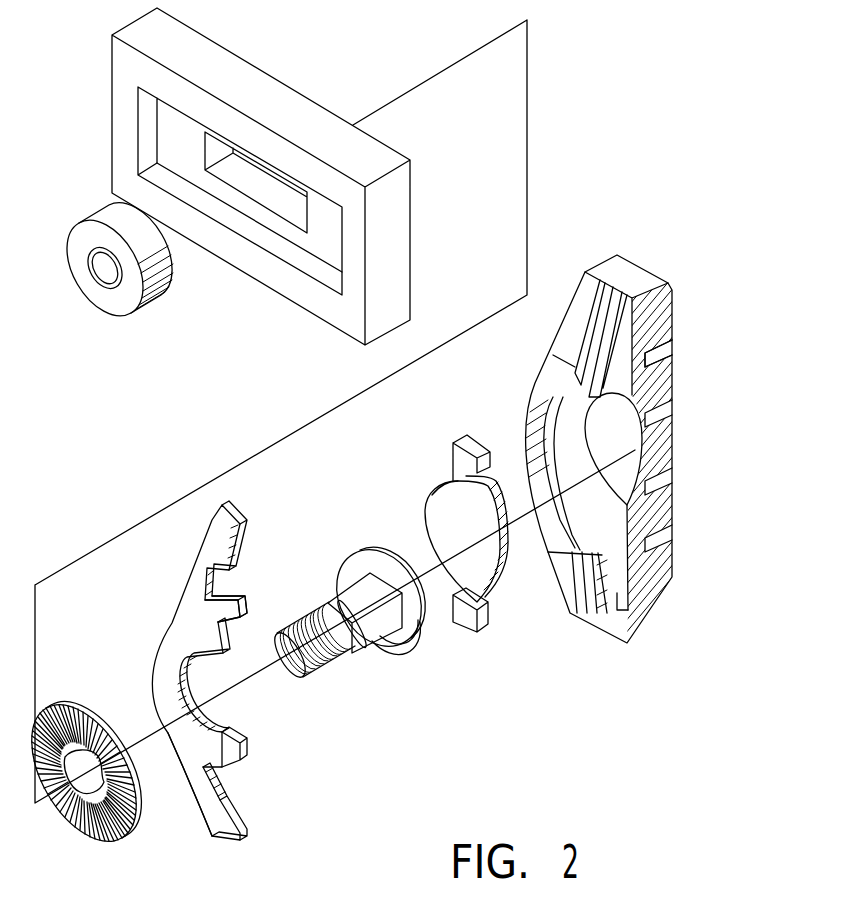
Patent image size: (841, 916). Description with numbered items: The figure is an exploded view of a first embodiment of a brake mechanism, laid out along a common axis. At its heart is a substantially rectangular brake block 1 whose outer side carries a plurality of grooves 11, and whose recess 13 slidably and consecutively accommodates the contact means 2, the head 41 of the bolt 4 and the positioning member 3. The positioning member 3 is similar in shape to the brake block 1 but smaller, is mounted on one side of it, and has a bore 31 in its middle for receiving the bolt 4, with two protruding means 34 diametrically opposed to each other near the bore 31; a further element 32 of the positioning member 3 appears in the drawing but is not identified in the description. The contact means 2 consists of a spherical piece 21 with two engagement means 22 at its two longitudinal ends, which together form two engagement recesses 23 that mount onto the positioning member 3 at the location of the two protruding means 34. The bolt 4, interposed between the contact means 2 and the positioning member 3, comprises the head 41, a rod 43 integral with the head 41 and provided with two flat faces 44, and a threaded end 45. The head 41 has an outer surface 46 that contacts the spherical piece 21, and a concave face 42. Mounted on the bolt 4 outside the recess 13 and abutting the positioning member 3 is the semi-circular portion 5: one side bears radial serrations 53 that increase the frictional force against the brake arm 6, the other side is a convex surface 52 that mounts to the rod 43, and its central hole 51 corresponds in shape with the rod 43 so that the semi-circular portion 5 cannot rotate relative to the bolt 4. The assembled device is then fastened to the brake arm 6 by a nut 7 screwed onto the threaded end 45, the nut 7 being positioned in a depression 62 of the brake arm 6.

The brake block 1 is at (570, 462).
The grooves 11 is at (665, 338).
The recess 13 is at (623, 593).
The contact means 2 is at (471, 535).
The spherical piece 21 is at (500, 563).
The engagement means 22 is at (470, 636).
The engagement recesses 23 is at (441, 484).
The positioning member 3 is at (215, 658).
The bore 31 is at (195, 677).
The lower arm 32 is at (177, 730).
The protruding means 34 is at (240, 601).
The bolt 4 is at (360, 618).
The head 41 is at (407, 650).
The concave face 42 is at (412, 634).
The rod 43 is at (364, 652).
The flat faces 44 is at (353, 656).
The threaded end 45 is at (318, 672).
The outer surface 46 is at (396, 563).
The semi-circular portion 5 is at (84, 770).
The central hole 51 is at (113, 840).
The convex surface 52 is at (115, 735).
The radial serrations 53 is at (62, 812).
The brake arm 6 is at (275, 83).
The depression 62 is at (240, 230).
The nut 7 is at (117, 313).